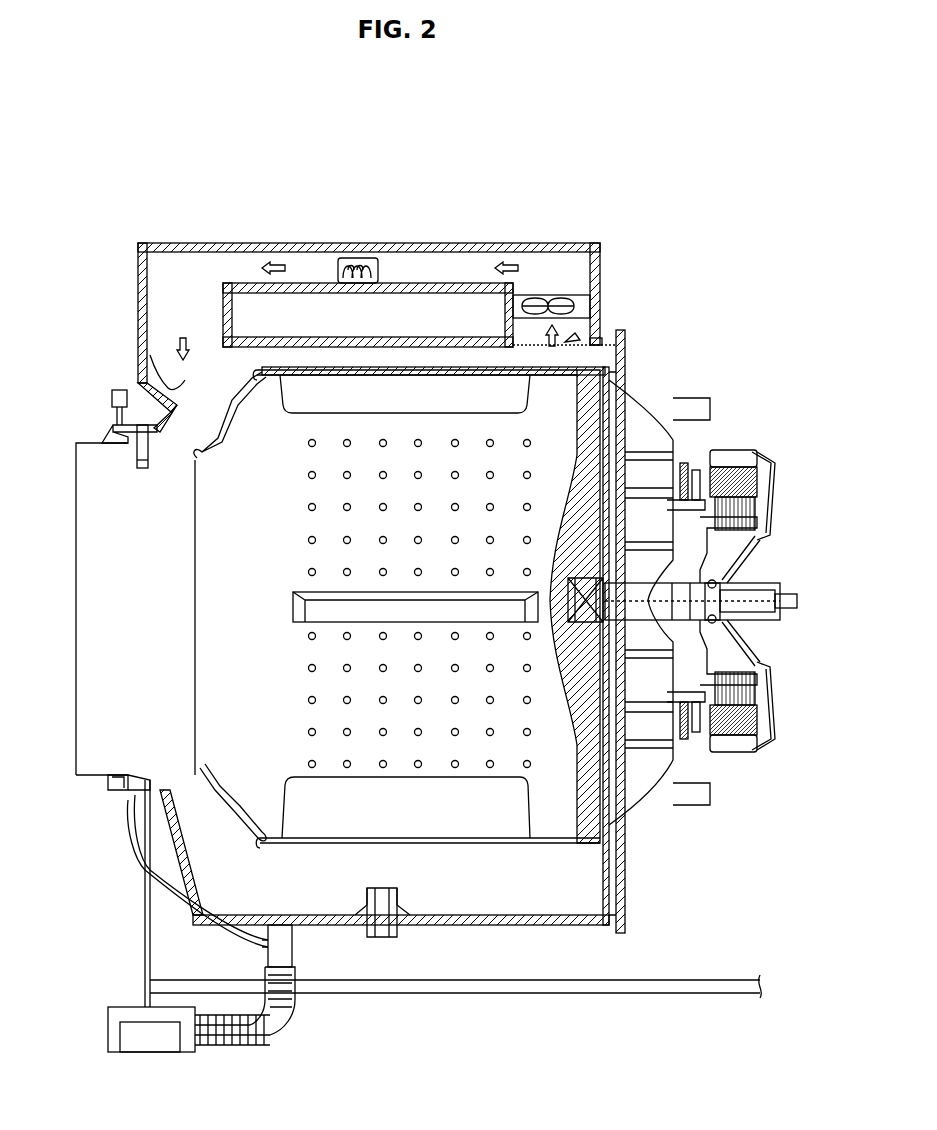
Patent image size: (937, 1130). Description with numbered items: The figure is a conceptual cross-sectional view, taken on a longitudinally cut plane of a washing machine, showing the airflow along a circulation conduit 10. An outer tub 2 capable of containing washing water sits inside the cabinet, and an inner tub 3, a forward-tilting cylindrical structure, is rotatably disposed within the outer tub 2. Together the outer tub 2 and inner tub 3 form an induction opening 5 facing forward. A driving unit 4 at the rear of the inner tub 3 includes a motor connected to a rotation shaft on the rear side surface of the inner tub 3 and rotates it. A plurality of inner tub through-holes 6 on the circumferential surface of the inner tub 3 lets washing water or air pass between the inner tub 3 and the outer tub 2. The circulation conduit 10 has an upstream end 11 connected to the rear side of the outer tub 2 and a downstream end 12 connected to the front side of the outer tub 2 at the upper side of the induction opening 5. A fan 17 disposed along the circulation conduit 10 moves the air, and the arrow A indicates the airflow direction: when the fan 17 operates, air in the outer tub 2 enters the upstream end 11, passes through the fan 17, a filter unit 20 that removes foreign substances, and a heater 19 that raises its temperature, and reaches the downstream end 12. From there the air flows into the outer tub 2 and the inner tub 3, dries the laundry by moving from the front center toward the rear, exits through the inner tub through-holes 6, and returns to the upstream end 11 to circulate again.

The outer tub 2 is at (628, 905).
The inner tub 3 is at (262, 845).
The driving unit 4 is at (723, 432).
The induction opening 5 is at (148, 605).
The inner tub through-holes 6 is at (530, 443).
The circulation conduit 10 is at (445, 243).
The upstream end 11 is at (578, 342).
The downstream end 12 is at (185, 378).
The fan 17 is at (572, 300).
The heater 19 is at (345, 258).
The filter unit 20 is at (512, 262).
The arrow A is at (272, 258).